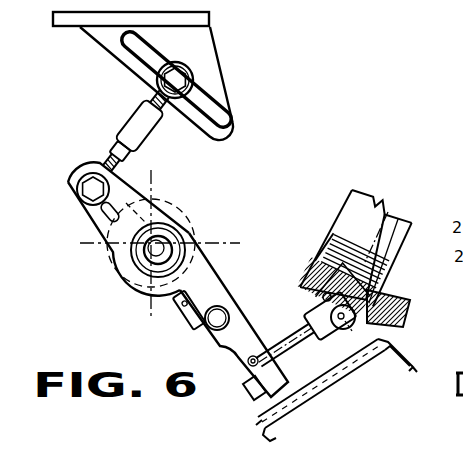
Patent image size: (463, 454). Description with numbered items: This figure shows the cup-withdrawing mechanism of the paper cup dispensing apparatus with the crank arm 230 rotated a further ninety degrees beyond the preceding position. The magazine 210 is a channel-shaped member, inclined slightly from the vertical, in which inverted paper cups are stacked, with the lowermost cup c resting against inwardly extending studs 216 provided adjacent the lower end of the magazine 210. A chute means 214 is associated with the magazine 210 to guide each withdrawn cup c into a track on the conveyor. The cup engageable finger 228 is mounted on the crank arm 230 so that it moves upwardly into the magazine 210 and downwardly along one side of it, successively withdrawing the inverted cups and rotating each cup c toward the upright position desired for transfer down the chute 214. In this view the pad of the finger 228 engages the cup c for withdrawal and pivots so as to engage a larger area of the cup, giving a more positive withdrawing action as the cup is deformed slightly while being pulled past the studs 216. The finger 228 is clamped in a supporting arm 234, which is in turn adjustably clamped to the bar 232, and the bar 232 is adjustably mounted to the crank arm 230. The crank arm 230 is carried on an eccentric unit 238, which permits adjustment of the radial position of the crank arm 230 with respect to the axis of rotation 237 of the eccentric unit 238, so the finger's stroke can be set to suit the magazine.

The cup magazine 210 is at (343, 213).
The chute means 214 is at (315, 400).
The inwardly extending stud 216 is at (323, 297).
The cup engageable finger 228 is at (312, 327).
The crank arm 230 is at (168, 296).
The bar or shaft 232 is at (213, 321).
The supporting arm 234 is at (236, 354).
The axis of rotation 237 is at (143, 245).
The eccentric unit 238 is at (117, 265).
The paper cup C is at (338, 223).